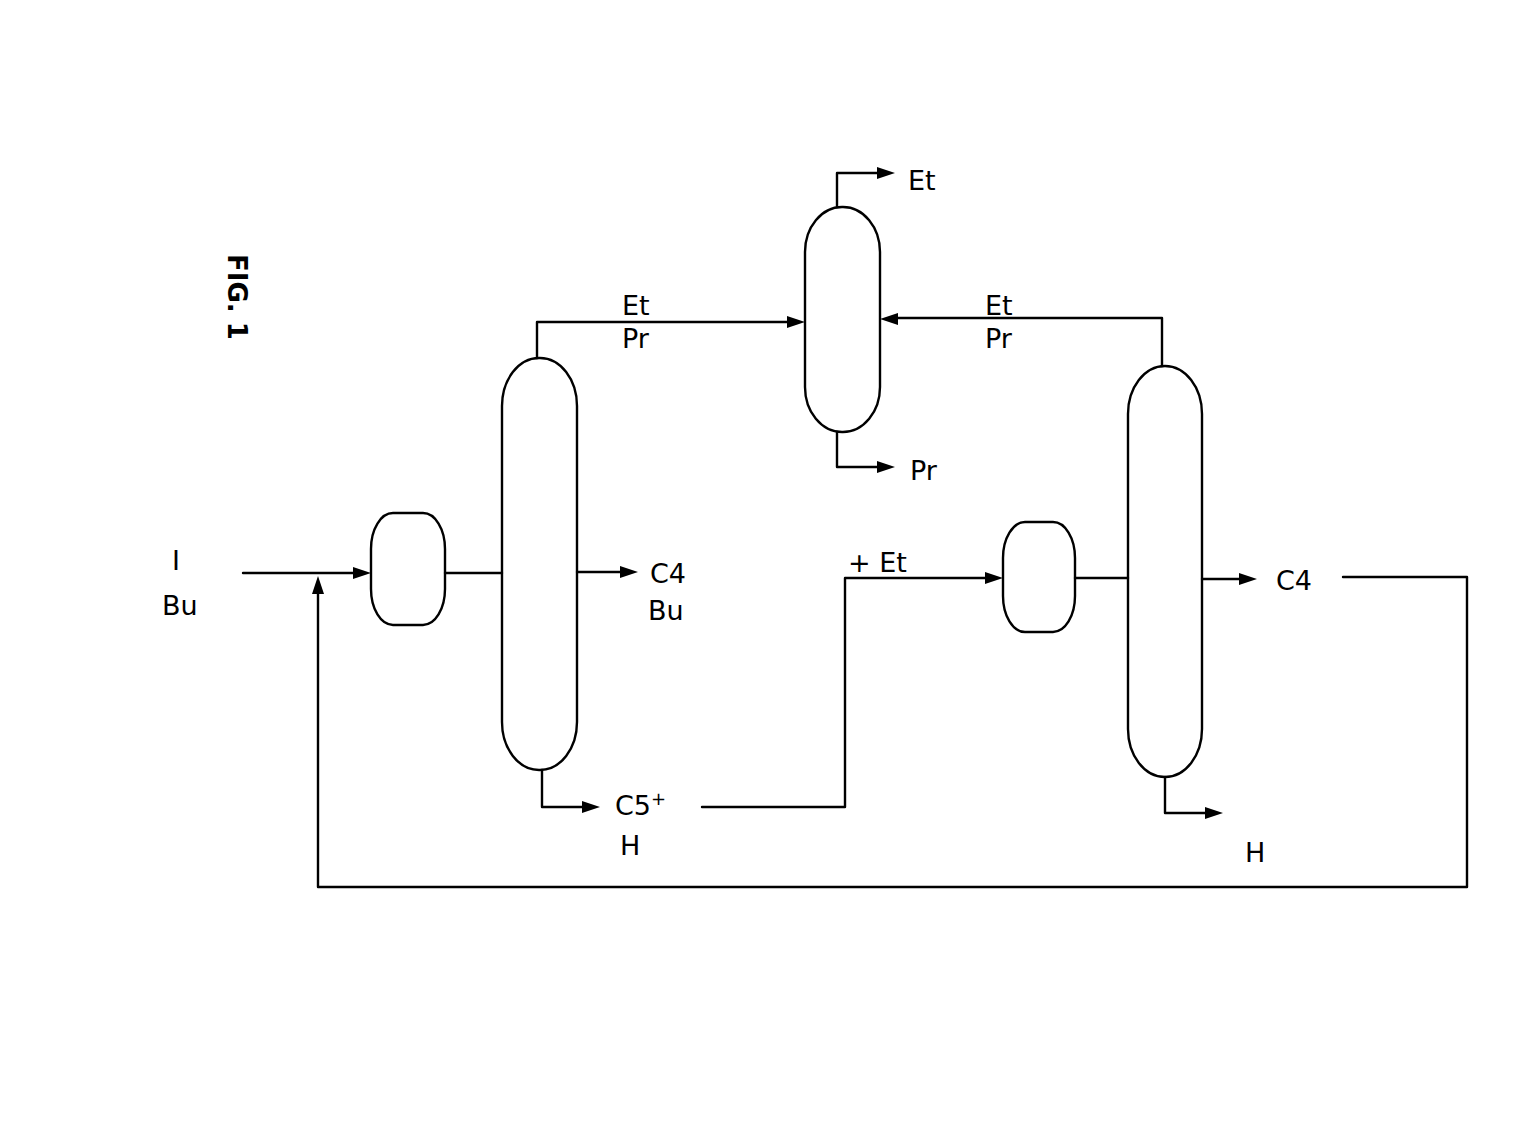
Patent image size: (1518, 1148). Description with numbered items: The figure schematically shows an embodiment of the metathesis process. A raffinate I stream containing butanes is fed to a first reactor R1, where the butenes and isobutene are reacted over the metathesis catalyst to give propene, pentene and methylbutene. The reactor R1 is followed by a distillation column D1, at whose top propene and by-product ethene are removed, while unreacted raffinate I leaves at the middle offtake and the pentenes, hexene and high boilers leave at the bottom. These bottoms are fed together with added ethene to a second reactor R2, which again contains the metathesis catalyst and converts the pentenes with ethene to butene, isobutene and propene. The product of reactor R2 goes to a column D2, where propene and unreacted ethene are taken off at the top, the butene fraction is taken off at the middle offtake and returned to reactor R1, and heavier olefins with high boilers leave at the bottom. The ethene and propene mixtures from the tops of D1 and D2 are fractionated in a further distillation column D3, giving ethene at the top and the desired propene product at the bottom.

The reactor R1 is at (408, 569).
The reactor R2 is at (1039, 577).
The distillation column D1 is at (539, 564).
The column D2 is at (1165, 571).
The distillation column D3 is at (842, 319).